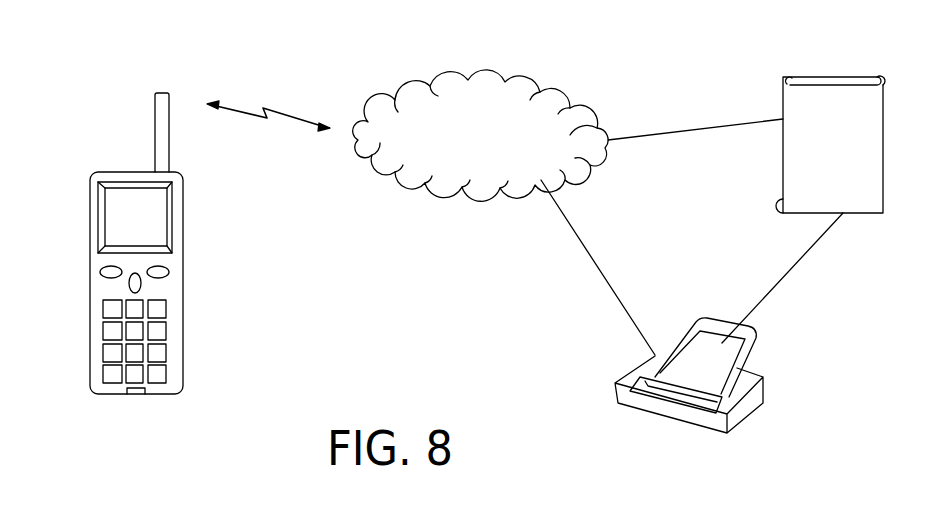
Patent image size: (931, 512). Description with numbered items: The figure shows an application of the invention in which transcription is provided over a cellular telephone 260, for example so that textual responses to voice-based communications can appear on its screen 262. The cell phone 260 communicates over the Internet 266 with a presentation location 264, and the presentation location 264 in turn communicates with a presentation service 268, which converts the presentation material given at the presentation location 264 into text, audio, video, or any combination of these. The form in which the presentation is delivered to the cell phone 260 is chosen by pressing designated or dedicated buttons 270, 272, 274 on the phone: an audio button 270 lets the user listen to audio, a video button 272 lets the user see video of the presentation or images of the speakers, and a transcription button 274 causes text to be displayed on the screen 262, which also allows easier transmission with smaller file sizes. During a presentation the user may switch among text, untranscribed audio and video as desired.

The cellular telephone 260 is at (133, 243).
The screen 262 is at (111, 227).
The presentation location 264 is at (835, 85).
The Internet 266 is at (541, 97).
The presentation service 268 is at (720, 360).
The audio button 270 is at (164, 272).
The video button 272 is at (160, 310).
The transcription button 274 is at (137, 353).